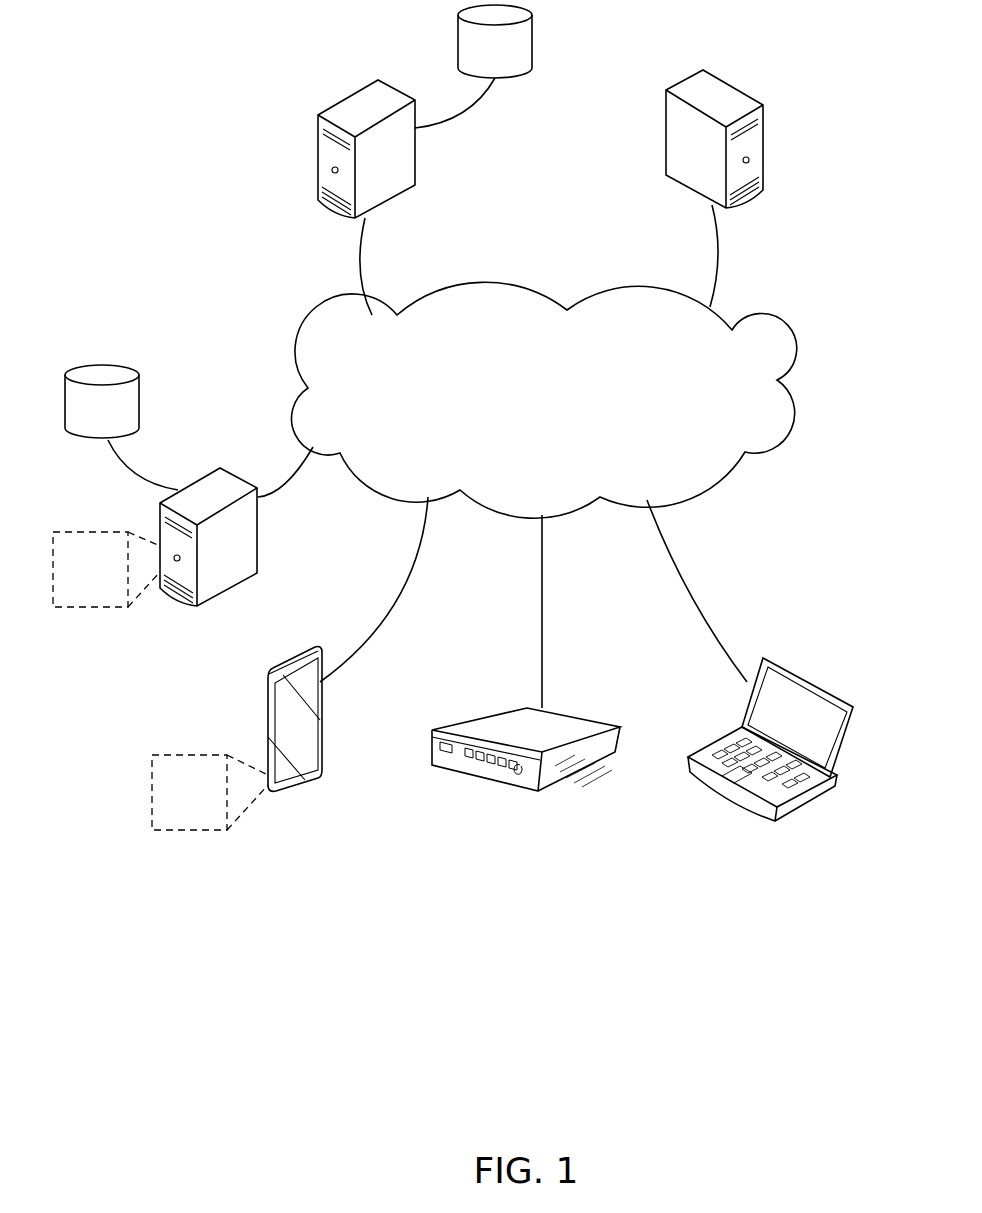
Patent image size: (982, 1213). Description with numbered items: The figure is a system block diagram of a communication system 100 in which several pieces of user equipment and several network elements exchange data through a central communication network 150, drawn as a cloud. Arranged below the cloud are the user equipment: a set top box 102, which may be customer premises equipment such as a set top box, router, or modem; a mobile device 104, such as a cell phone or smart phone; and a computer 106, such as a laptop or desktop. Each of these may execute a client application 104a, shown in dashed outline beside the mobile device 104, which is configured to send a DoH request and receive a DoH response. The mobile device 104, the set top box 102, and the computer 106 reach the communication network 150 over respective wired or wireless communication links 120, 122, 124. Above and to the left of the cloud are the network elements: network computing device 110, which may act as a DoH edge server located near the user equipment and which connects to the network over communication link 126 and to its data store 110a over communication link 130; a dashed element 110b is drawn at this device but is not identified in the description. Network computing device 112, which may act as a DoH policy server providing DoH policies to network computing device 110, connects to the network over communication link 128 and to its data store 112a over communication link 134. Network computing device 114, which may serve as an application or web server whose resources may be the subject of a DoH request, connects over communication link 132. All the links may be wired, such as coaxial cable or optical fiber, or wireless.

The communication system 100 is at (103, 184).
The set top box 102 is at (528, 793).
The mobile device 104 is at (300, 772).
The client application 104a is at (210, 792).
The computer 106 is at (803, 803).
The network computing device 110 is at (220, 466).
The data store 110a is at (102, 401).
The server module 110b is at (106, 569).
The network computing device 112 is at (333, 108).
The data store 112a is at (495, 41).
The network computing device 114 is at (749, 93).
The communication link 120 is at (397, 595).
The communication link 122 is at (543, 590).
The communication link 124 is at (692, 588).
The communication link 126 is at (288, 485).
The communication link 128 is at (358, 259).
The communication link 130 is at (140, 477).
The communication link 132 is at (722, 246).
The communication link 134 is at (458, 116).
The communication network 150 is at (528, 441).